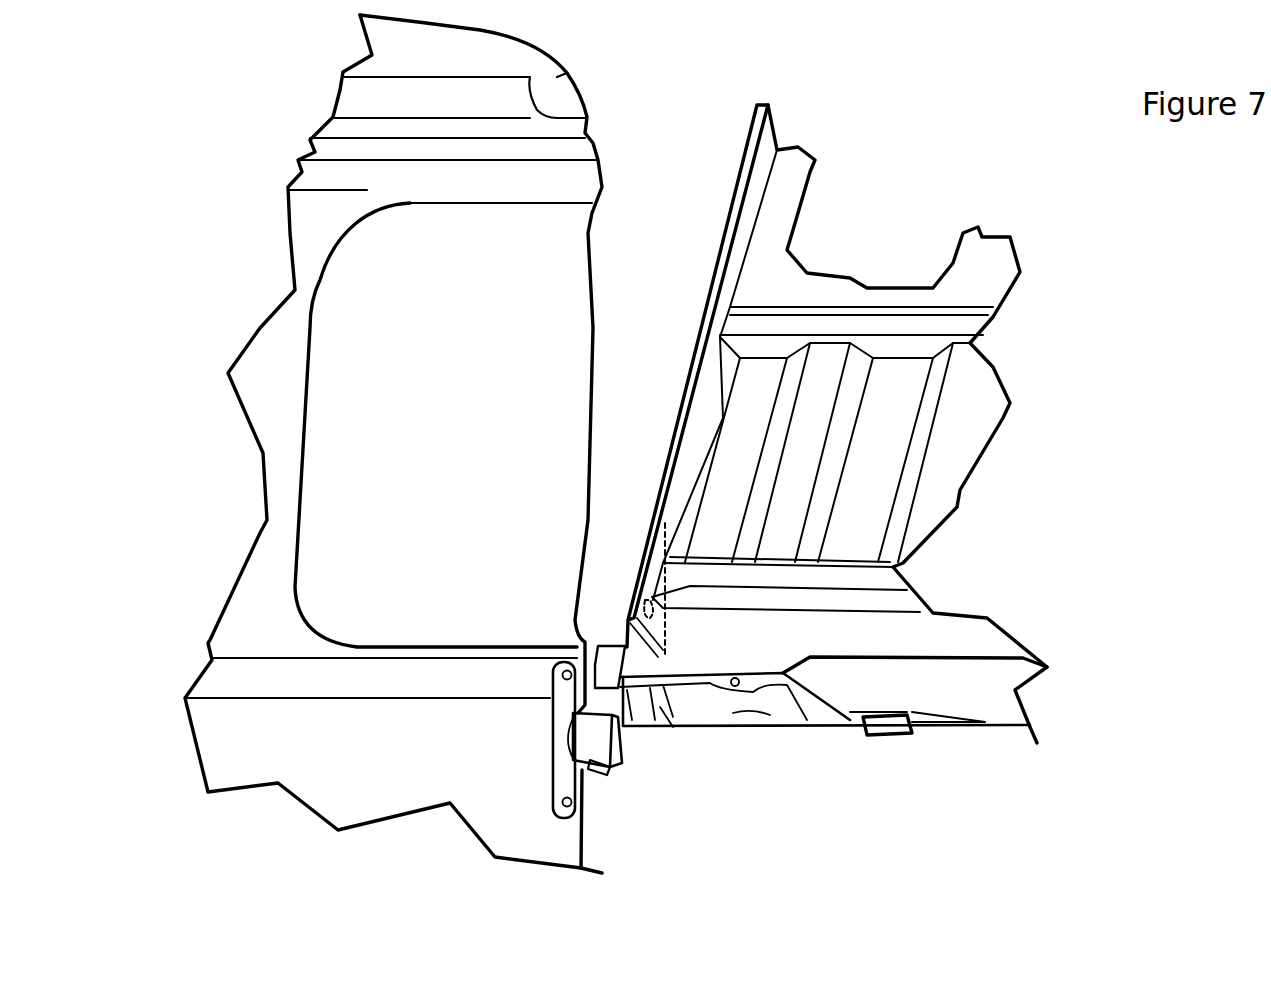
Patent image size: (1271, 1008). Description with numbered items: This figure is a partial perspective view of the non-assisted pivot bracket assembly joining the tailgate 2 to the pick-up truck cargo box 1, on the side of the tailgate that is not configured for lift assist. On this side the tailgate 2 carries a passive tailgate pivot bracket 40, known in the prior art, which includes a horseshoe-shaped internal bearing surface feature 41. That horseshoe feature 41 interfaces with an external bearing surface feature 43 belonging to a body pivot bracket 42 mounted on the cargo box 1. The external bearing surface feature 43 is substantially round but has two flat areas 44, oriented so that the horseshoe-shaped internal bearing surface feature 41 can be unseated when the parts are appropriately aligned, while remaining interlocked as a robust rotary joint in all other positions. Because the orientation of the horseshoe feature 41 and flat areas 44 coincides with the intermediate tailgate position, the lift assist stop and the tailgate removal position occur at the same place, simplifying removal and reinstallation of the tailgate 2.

The pick-up truck cargo box 1 is at (358, 735).
The tailgate 2 is at (960, 690).
The passive tailgate pivot bracket 40 is at (657, 707).
The horseshoe-shaped internal bearing surface feature 41 is at (606, 662).
The body pivot bracket 42 is at (563, 782).
The external bearing surface feature 43 is at (602, 768).
The flat areas 44 is at (593, 735).